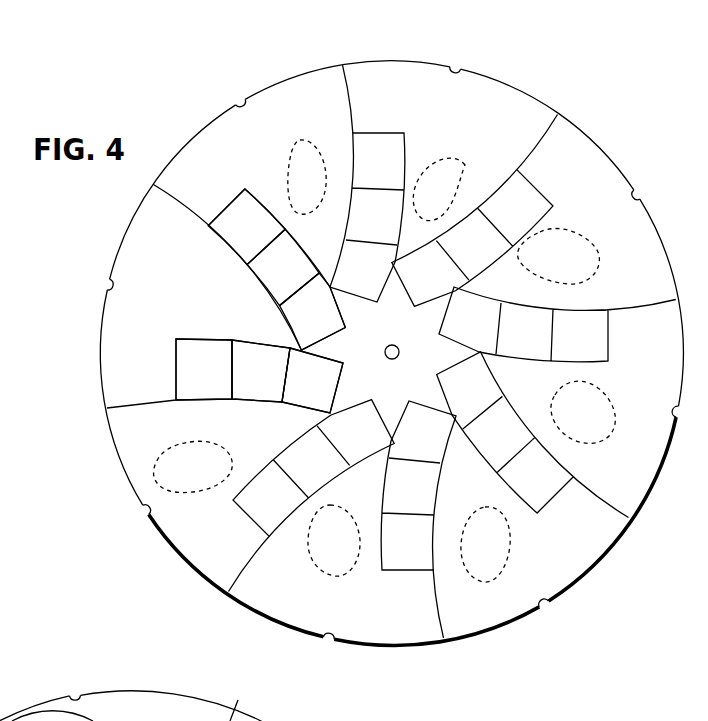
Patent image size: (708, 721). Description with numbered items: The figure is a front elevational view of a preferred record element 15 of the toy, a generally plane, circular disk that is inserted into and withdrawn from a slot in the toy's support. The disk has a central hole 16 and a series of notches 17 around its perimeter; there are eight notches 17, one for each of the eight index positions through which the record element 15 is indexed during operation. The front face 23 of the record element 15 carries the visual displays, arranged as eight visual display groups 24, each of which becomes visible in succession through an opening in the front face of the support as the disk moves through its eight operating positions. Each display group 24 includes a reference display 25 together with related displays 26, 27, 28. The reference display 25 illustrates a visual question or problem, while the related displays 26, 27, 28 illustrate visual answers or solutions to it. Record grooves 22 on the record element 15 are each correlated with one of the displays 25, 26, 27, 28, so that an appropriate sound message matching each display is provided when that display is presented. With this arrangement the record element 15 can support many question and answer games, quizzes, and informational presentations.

The record element 15 is at (309, 67).
The central hole 16 is at (392, 345).
The notches 17 is at (462, 68).
The record grooves 22 is at (205, 718).
The front face 23 is at (497, 126).
The visual display groups 24 is at (112, 491).
The reference display 25 is at (305, 146).
The related display 26 is at (235, 240).
The related display 27 is at (268, 283).
The related display 28 is at (297, 313).